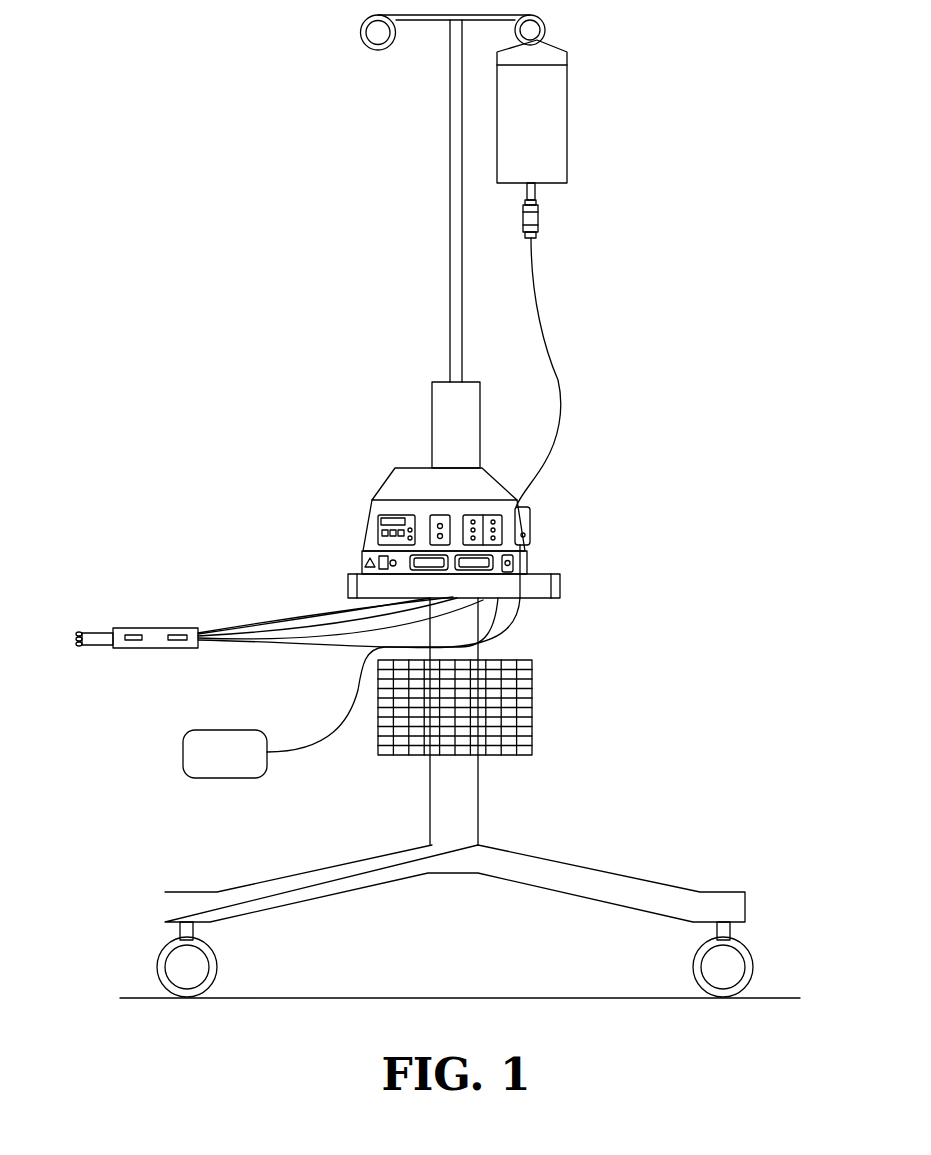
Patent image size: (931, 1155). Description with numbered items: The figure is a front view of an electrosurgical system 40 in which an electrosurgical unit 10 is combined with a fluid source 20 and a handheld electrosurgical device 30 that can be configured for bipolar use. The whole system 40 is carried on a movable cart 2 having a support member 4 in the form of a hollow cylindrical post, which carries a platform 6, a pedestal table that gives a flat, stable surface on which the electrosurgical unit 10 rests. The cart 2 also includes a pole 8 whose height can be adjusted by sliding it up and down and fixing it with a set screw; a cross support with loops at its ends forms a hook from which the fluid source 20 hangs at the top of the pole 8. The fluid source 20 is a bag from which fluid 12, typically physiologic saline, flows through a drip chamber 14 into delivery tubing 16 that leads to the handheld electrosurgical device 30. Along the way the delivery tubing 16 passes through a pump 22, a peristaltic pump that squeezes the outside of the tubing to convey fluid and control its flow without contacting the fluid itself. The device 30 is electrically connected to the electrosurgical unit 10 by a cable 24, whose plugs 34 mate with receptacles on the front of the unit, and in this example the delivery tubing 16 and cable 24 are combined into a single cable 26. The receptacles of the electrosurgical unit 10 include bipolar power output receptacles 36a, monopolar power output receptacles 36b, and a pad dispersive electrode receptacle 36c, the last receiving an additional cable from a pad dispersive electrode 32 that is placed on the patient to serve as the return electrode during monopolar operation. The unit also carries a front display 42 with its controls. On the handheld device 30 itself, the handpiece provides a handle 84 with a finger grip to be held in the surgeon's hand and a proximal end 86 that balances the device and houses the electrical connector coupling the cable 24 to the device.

The movable cart 2 is at (587, 665).
The support member 4 is at (473, 643).
The platform 6 is at (348, 583).
The pole 8 is at (450, 175).
The electrosurgical unit 10 is at (398, 479).
The fluid 12 is at (545, 160).
The drip chamber 14 is at (540, 215).
The delivery tubing 16 is at (558, 378).
The fluid source 20 is at (567, 110).
The pump 22 is at (531, 515).
The cable 24 is at (285, 641).
The single cable 26 is at (266, 628).
The handheld electrosurgical device 30 is at (143, 648).
The pad dispersive electrode 32 is at (222, 778).
The plugs 34 is at (496, 604).
The bipolar power output receptacles 36a is at (427, 553).
The monopolar power output receptacles 36b is at (488, 556).
The pad dispersive electrode receptacle 36c is at (515, 560).
The system 40 is at (262, 92).
The display 42 is at (380, 537).
The handle 84 is at (137, 635).
The proximal end 86 is at (180, 635).